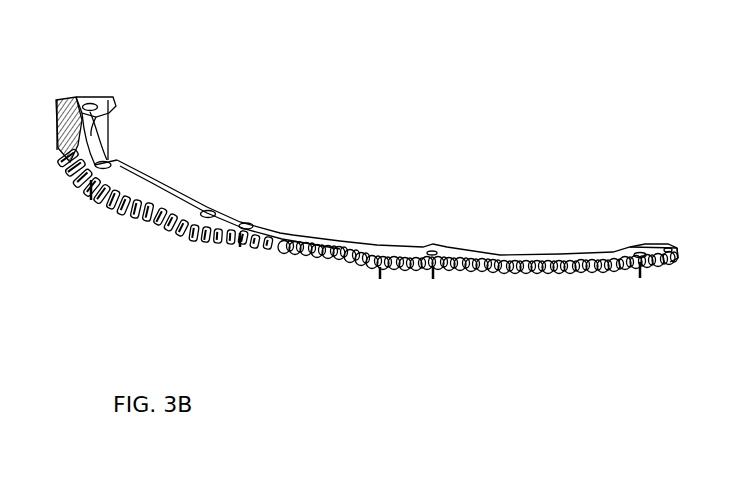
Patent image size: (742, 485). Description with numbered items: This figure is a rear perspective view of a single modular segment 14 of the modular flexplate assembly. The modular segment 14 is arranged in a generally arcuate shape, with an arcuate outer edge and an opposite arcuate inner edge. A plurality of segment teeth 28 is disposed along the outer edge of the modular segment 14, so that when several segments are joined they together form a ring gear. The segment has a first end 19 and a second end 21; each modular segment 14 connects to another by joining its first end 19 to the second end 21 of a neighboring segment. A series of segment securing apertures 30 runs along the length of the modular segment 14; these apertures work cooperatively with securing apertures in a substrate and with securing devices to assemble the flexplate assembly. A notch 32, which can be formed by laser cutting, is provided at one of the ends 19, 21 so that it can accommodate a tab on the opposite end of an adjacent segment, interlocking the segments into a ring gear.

The modular segment 14 is at (440, 117).
The first end 19 is at (675, 253).
The second end 21 is at (86, 98).
The segment teeth 28 is at (310, 257).
The segment securing apertures 30 is at (110, 161).
The notch 32 is at (97, 103).